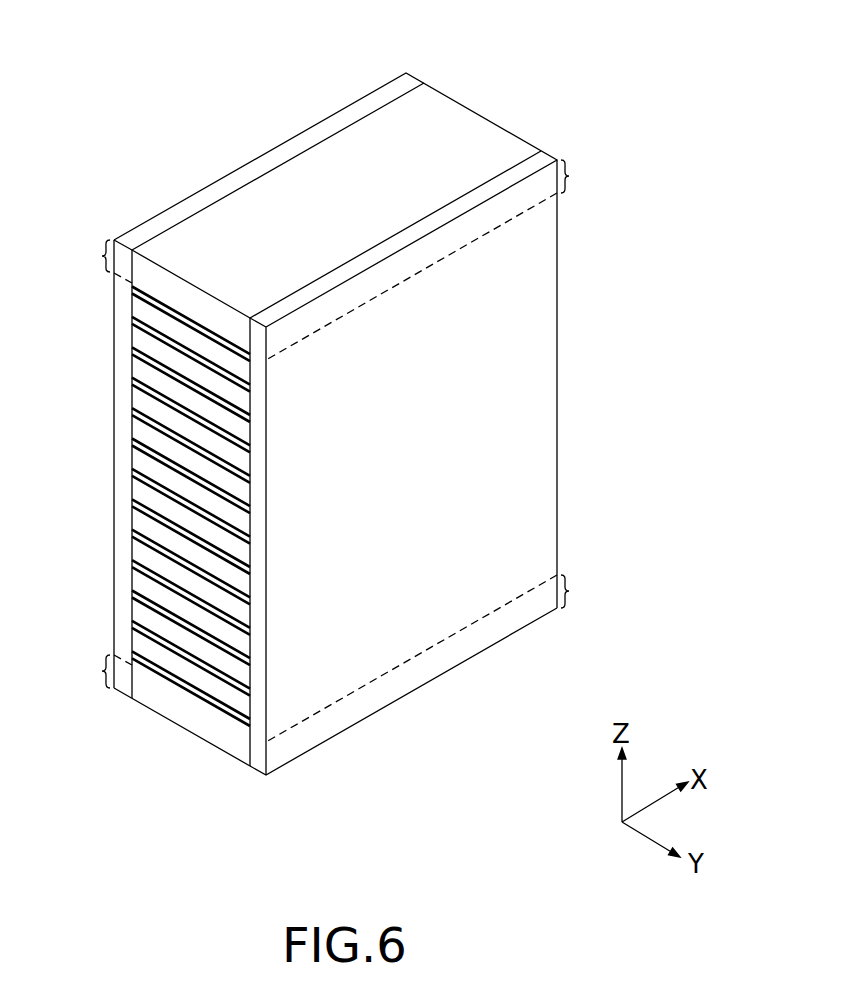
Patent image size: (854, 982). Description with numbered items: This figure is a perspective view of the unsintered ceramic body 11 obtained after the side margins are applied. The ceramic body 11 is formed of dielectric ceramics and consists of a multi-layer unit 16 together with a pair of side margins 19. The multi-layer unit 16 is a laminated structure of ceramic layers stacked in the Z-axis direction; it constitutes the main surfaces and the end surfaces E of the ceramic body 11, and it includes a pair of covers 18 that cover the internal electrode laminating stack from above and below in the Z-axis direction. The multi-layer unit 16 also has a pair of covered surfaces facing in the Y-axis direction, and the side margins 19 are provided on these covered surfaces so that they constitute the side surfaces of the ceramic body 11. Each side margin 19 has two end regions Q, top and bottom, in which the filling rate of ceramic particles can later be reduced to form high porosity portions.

The ceramic body 11 is at (195, 80).
The multi-layer unit 16 is at (494, 103).
The cover 18 is at (449, 118).
The side margin 19 is at (543, 447).
The end region Q is at (336, 424).
The end surface E is at (191, 507).